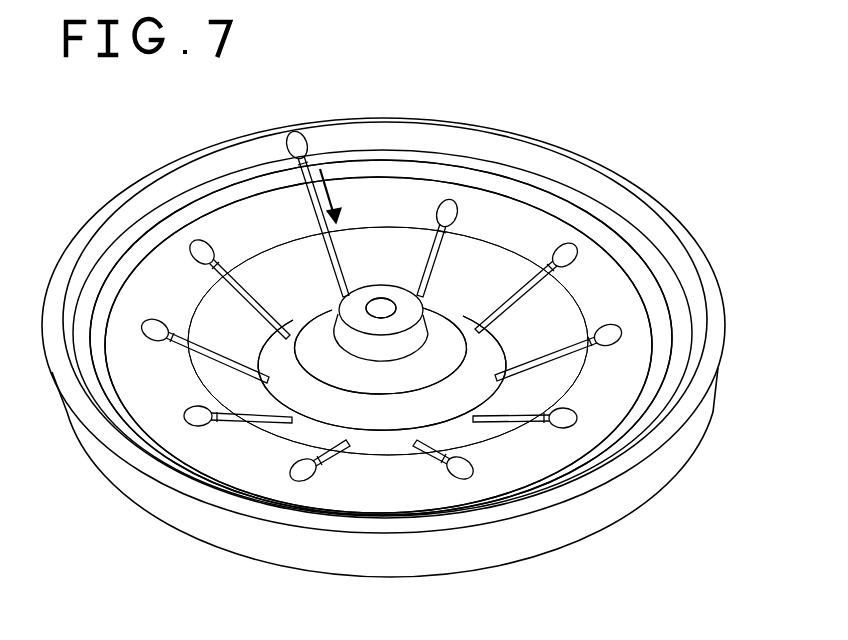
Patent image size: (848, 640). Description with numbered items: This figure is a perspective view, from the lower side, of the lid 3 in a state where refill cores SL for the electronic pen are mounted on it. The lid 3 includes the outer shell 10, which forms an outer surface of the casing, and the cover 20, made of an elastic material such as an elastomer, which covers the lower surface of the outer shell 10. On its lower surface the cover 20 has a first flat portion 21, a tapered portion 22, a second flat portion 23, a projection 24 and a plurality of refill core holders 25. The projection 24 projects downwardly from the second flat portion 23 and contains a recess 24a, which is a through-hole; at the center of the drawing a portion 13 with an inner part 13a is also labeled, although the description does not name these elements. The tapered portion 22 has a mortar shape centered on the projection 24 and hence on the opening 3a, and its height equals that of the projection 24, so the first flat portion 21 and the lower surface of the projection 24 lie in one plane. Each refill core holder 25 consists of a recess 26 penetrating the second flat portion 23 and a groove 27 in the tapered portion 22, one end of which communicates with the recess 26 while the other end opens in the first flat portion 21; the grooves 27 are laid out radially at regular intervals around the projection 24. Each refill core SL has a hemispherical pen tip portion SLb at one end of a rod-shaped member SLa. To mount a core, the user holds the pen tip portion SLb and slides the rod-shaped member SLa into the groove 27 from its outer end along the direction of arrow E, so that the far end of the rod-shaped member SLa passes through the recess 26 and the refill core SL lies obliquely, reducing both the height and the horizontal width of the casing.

The lid 3 is at (718, 112).
The outer shell 10 is at (715, 335).
The hub 13 is at (393, 350).
The hub hole 13a is at (380, 298).
The opening 3a is at (381, 308).
The cover 20 is at (607, 283).
The first flat portion 21 is at (507, 213).
The tapered portion 22 is at (476, 270).
The second flat portion 23 is at (302, 335).
The projection 24 is at (422, 403).
The recess 24a is at (468, 412).
The refill core holder 25 is at (339, 294).
The recess 26 is at (150, 322).
The groove 27 is at (215, 356).
The refill core SL is at (617, 192).
The rod-shaped member SLa is at (640, 300).
The pen tip portion SLb is at (641, 213).
The arrow E is at (335, 183).